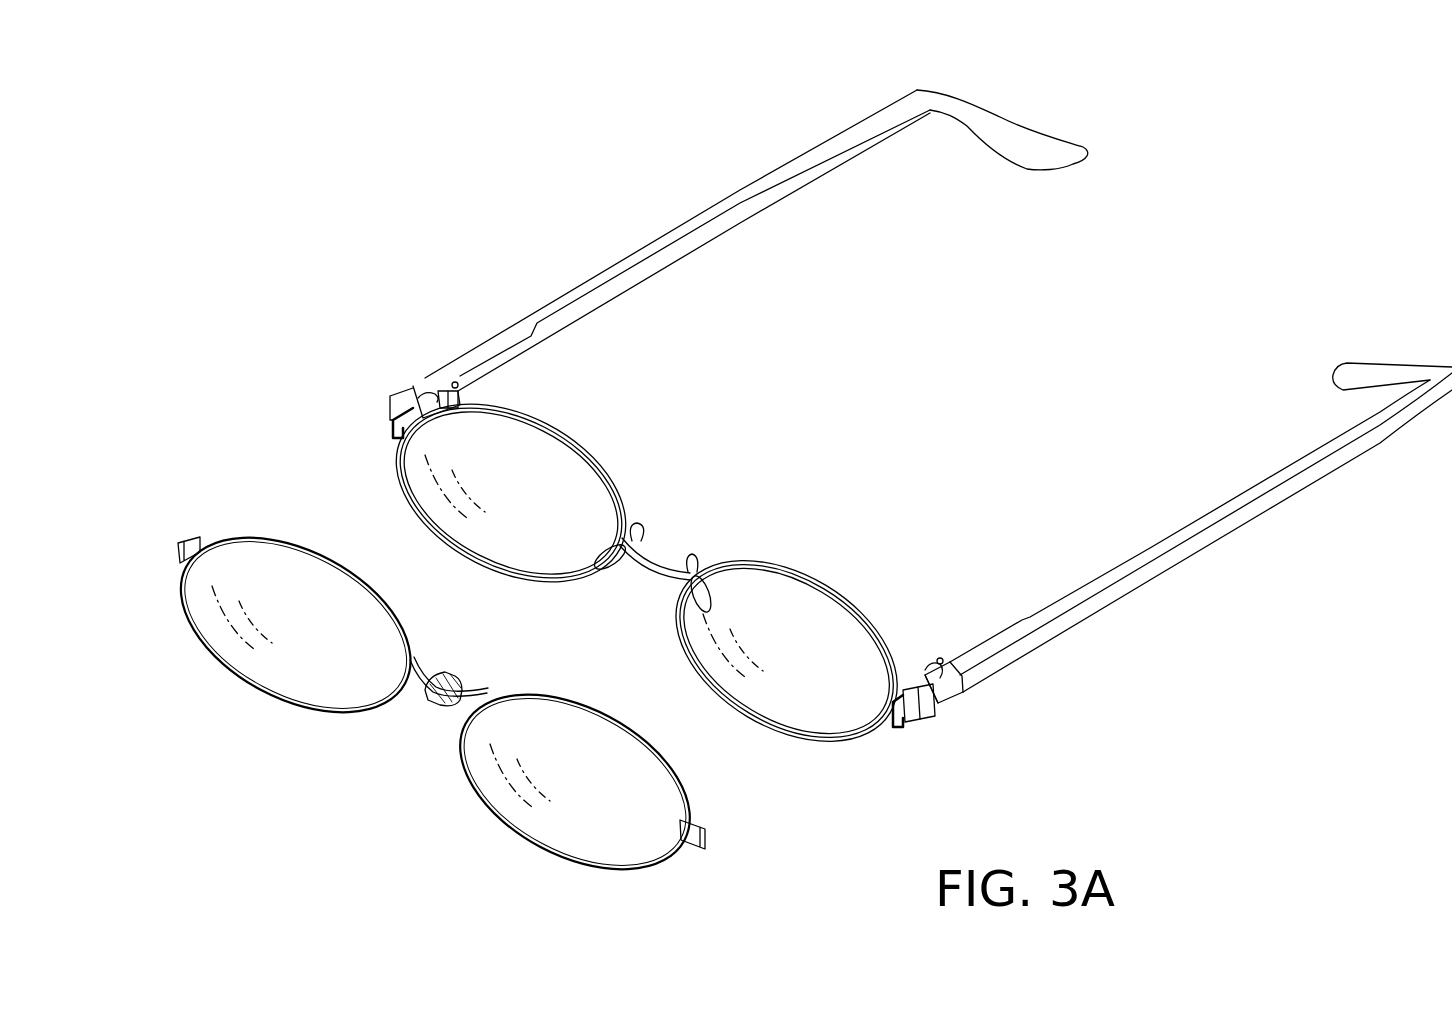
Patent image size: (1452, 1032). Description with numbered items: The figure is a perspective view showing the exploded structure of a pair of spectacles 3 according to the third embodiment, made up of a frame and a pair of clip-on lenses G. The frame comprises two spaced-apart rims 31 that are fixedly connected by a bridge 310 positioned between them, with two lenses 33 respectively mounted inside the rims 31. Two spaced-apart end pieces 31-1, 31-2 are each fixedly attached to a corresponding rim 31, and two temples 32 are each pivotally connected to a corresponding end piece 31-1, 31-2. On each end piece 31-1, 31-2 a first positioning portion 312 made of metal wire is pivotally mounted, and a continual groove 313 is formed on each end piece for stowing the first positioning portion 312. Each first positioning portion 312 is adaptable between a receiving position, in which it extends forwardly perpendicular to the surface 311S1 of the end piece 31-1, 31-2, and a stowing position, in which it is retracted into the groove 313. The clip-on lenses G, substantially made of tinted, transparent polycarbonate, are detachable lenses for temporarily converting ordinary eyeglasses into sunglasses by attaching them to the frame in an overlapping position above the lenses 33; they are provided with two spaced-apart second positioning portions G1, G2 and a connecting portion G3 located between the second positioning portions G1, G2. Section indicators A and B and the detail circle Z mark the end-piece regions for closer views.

The spectacles 3 is at (1318, 723).
The rim 31 is at (995, 692).
The end piece 31-1 is at (983, 670).
The end piece 31-2 is at (393, 410).
The bridge 310 is at (658, 558).
The surface of the end piece 311S1 is at (930, 712).
The first positioning portion 312 is at (928, 672).
The groove 313 is at (940, 710).
The temple 32 is at (1004, 674).
The lens 33 is at (814, 708).
The clip-on lenses G is at (440, 692).
The second positioning portion G1 is at (690, 822).
The second positioning portion G2 is at (195, 540).
The connecting portion G3 is at (448, 680).
The section line A is at (910, 667).
The section line B is at (410, 418).
The detail circle Z is at (963, 798).